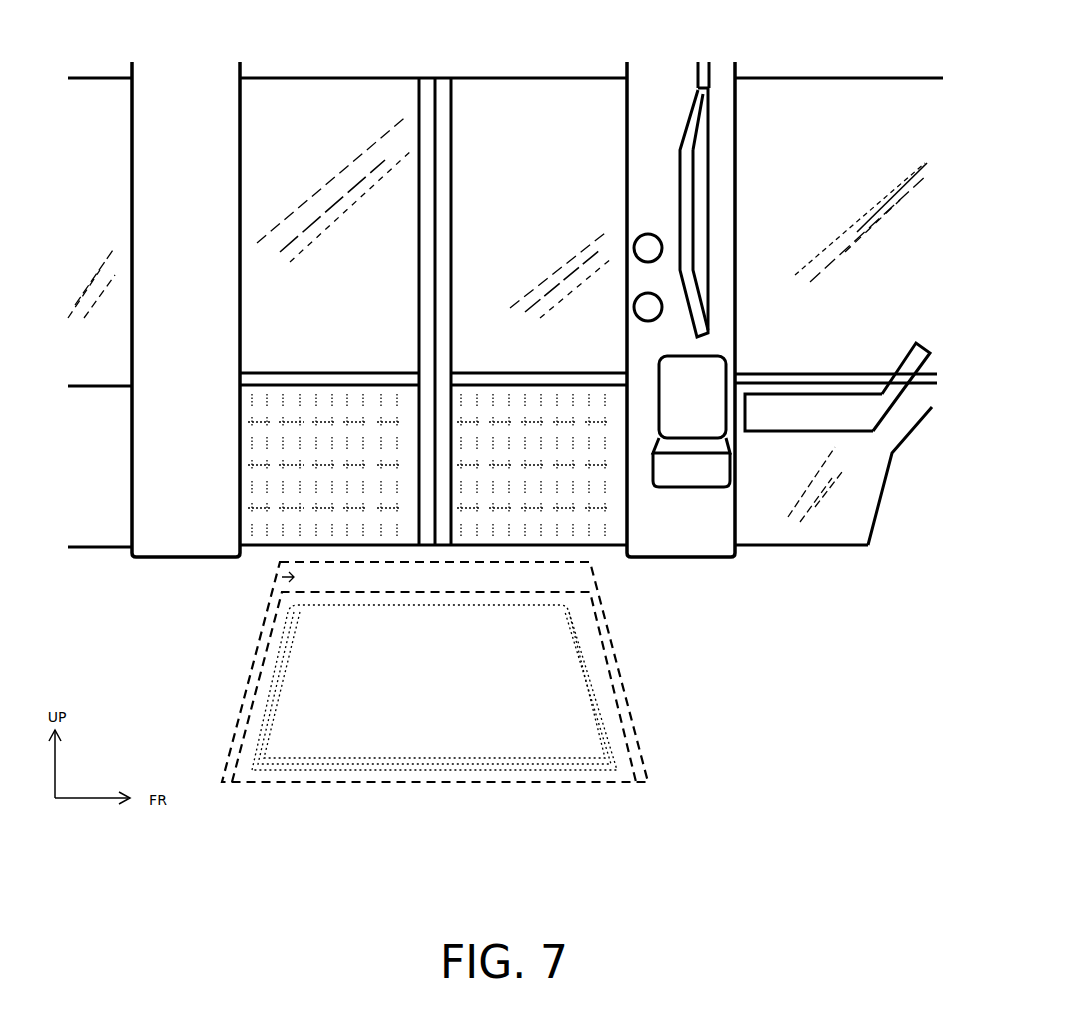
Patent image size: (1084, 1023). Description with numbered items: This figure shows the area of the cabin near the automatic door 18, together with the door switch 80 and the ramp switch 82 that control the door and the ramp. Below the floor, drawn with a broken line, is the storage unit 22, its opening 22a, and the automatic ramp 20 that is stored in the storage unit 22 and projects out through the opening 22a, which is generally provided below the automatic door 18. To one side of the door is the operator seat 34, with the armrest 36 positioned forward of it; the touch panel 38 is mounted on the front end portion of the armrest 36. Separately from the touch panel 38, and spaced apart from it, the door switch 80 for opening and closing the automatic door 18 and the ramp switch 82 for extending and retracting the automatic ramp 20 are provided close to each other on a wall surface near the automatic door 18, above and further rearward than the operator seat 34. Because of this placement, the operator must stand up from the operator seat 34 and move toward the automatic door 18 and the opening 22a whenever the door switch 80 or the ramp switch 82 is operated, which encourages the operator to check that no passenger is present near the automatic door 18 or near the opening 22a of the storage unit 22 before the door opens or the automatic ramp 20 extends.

The automatic door 18 is at (482, 133).
The door switch 80 is at (648, 248).
The ramp switch 82 is at (645, 307).
The operator seat 34 is at (692, 503).
The armrest 36 is at (820, 417).
The touch panel 38 is at (897, 363).
The storage unit 22 is at (620, 652).
The opening 22a is at (282, 577).
The automatic ramp 20 is at (513, 703).